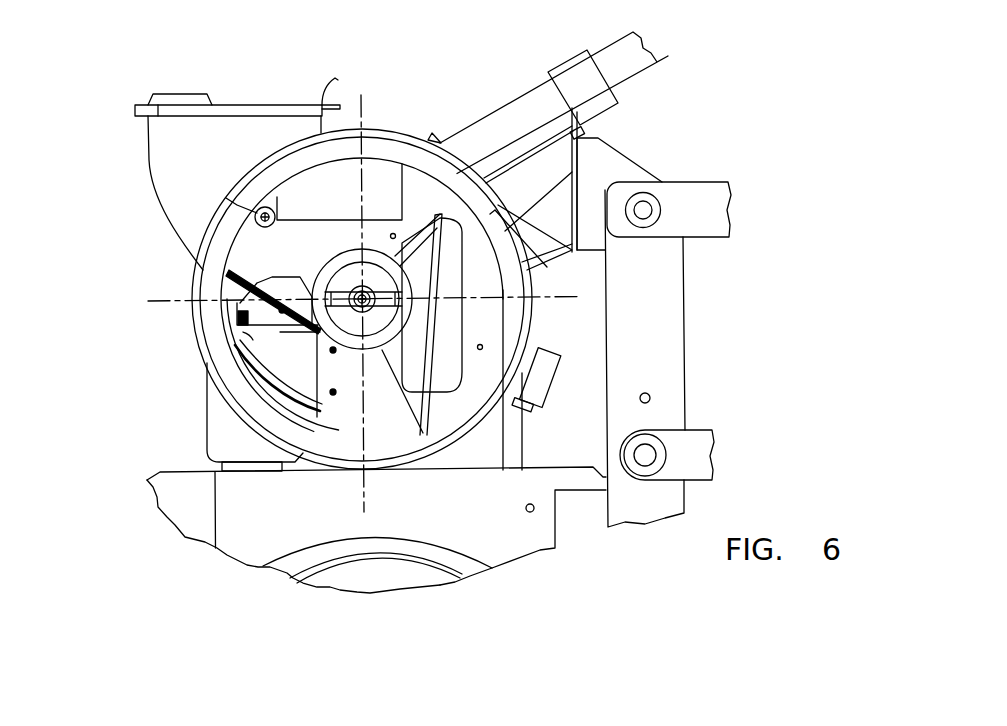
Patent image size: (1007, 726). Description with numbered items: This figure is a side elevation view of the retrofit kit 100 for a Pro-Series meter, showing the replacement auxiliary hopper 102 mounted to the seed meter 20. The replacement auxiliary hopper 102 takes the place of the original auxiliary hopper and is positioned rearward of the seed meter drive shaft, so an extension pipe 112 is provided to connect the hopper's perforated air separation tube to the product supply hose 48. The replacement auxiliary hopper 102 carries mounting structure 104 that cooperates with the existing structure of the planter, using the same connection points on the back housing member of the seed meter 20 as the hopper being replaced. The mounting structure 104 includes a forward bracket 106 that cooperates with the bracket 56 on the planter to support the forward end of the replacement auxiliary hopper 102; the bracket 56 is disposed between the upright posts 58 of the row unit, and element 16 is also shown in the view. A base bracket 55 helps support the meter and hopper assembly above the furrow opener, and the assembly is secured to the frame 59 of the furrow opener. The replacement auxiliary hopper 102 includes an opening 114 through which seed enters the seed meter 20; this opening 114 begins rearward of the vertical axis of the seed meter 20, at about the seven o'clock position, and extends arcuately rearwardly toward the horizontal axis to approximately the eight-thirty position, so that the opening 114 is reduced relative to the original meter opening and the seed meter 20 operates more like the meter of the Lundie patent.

The retrofit kit 100 is at (158, 48).
The replacement auxiliary hopper 102 is at (160, 168).
The extension pipe 112 is at (500, 120).
The product supply hose 48 is at (643, 73).
The forward bracket 106 is at (590, 130).
The bracket 56 is at (615, 165).
The frame member 16 is at (745, 208).
The mounting structure 104 is at (538, 248).
The upright posts 58 is at (681, 326).
The seed meter 20 is at (185, 337).
The opening 114 is at (268, 346).
The base bracket 55 is at (214, 436).
The frame 59 is at (165, 498).